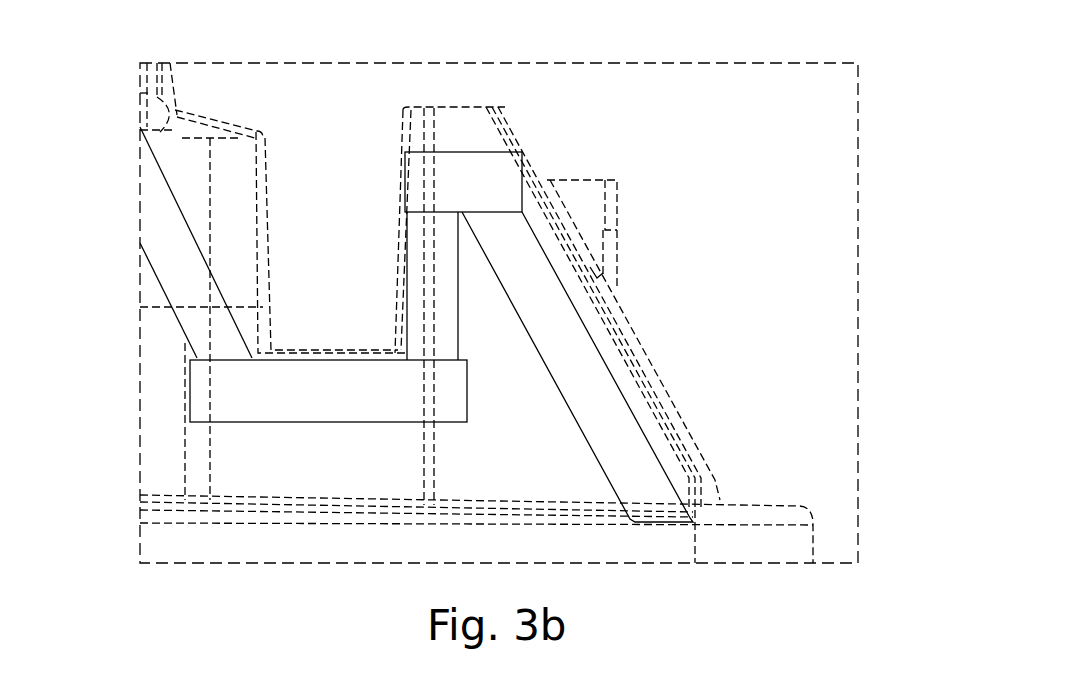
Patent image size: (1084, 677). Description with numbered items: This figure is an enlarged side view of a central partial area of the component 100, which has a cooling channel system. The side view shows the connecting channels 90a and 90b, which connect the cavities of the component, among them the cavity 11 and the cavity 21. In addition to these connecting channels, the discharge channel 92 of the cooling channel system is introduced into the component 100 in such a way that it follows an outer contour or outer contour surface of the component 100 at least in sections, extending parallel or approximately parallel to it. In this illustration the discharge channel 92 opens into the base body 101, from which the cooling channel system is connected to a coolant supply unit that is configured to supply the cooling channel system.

The component 100 is at (570, 88).
The cavity 21 is at (485, 182).
The connecting channel 90a is at (432, 290).
The connecting channel 90b is at (163, 218).
The cavity 11 is at (237, 390).
The discharge channel 92 is at (590, 392).
The base body 101 is at (743, 542).